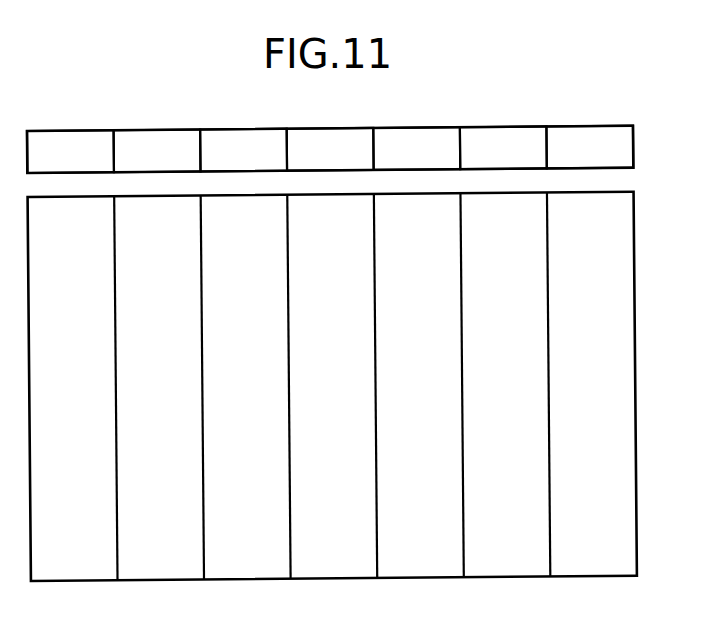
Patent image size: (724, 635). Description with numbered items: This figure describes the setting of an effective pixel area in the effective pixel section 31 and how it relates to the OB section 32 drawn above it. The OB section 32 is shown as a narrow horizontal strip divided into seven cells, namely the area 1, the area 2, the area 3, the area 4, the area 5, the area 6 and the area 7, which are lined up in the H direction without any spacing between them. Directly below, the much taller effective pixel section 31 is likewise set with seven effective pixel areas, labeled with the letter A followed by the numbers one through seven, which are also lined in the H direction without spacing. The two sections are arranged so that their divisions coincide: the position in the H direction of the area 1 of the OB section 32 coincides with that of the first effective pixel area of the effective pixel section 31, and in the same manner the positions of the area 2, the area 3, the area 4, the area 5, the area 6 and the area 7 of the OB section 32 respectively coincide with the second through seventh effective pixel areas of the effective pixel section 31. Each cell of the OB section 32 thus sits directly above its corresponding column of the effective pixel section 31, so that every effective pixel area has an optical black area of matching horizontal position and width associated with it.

The effective pixel section 31 is at (640, 233).
The OB section 32 is at (369, 142).
The area 1 of the OB section 1 is at (70, 151).
The area 2 of the OB section 2 is at (157, 150).
The area 3 of the OB section 3 is at (243, 150).
The area 4 of the OB section 4 is at (330, 149).
The area 5 of the OB section 5 is at (416, 148).
The area 6 of the OB section 6 is at (503, 147).
The area 7 of the OB section 7 is at (589, 147).